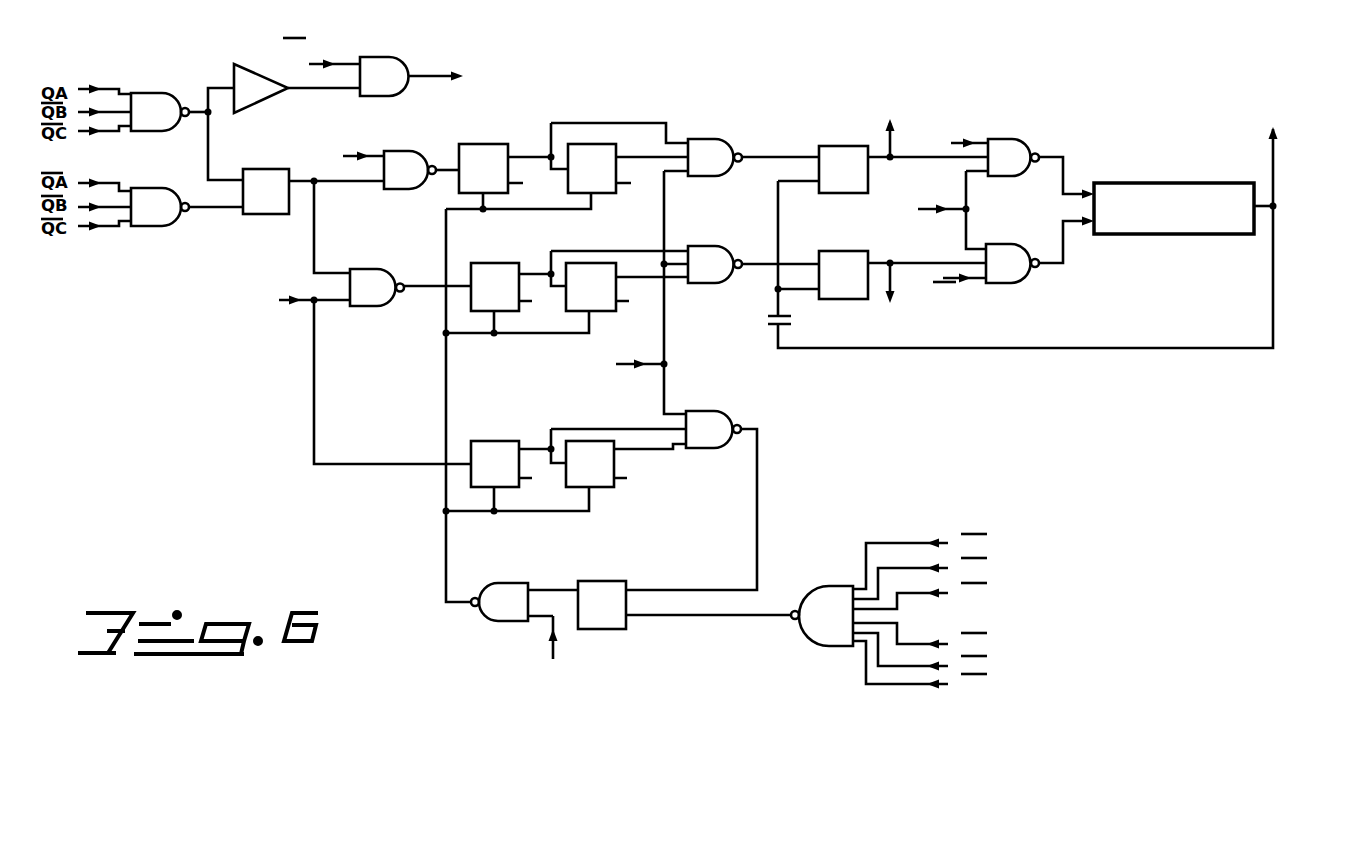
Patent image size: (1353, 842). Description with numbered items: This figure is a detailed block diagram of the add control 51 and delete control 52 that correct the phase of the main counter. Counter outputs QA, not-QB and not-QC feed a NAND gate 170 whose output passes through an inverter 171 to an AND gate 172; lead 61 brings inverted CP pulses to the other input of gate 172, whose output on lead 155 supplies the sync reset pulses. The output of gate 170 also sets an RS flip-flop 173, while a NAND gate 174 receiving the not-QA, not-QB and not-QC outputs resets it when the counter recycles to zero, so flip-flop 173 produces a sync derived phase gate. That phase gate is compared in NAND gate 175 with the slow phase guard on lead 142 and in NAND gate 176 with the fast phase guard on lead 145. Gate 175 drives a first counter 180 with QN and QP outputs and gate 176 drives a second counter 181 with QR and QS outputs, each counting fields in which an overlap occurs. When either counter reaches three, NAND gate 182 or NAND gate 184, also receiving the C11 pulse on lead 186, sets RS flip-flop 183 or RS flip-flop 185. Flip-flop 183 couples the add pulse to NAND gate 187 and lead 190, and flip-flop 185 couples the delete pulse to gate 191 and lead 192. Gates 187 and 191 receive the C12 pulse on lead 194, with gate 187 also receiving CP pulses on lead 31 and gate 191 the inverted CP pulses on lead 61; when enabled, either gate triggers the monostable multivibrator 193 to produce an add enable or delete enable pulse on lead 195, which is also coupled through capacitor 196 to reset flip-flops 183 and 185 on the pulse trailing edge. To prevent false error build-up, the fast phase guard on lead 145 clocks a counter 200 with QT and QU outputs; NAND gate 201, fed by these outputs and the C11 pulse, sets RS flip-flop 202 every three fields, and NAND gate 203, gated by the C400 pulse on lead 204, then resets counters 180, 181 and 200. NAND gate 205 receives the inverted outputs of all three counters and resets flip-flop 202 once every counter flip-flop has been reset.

The lead 31 is at (967, 141).
The add control 51 is at (823, 62).
The delete control 52 is at (836, 357).
The lead 61 is at (324, 61).
The lead 142 is at (352, 160).
The lead 145 is at (293, 306).
The lead 155 is at (456, 70).
The NAND gate 170 is at (145, 92).
The inverter 171 is at (227, 64).
The AND gate 172 is at (390, 57).
The RS flip-flop 173 is at (263, 214).
The NAND gate 174 is at (146, 188).
The NAND gate 175 is at (405, 151).
The NAND gate 176 is at (370, 268).
The first counter 180 is at (594, 108).
The second counter 181 is at (569, 246).
The NAND gate 182 is at (706, 137).
The RS flip-flop 183 is at (830, 145).
The NAND gate 184 is at (720, 246).
The RS flip-flop 185 is at (830, 250).
The lead 186 is at (640, 362).
The NAND gate 187 is at (1022, 139).
The lead 190 is at (893, 124).
The gate 191 is at (1000, 244).
The lead 192 is at (893, 288).
The multivibrator 193 is at (1143, 183).
The lead 194 is at (935, 207).
The lead 195 is at (1276, 136).
The capacitor 196 is at (773, 315).
The counter 200 is at (542, 423).
The NAND gate 201 is at (708, 410).
The RS flip-flop 202 is at (588, 580).
The NAND gate 203 is at (498, 582).
The lead 204 is at (560, 641).
The NAND gate 205 is at (828, 585).